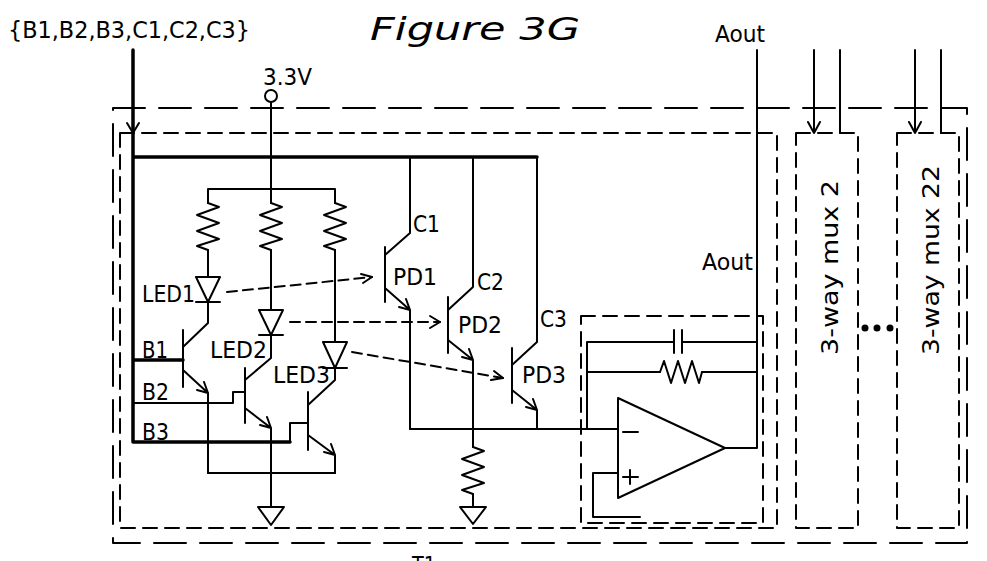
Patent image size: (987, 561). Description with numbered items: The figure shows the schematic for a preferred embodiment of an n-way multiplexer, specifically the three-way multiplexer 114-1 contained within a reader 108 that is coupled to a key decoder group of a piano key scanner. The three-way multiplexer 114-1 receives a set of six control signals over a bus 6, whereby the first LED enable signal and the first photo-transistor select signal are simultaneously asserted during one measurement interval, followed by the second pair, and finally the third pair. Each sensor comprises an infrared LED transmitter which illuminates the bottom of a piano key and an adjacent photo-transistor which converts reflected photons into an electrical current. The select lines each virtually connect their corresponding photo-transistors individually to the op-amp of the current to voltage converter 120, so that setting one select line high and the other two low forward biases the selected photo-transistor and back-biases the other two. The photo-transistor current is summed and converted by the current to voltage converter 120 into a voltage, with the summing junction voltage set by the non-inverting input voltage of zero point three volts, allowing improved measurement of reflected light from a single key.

The reader 108 is at (478, 108).
The 3-way multiplexer 114-1 is at (555, 128).
The current to voltage converter 120 is at (672, 410).
The 6-bit control bus 6 is at (125, 78).